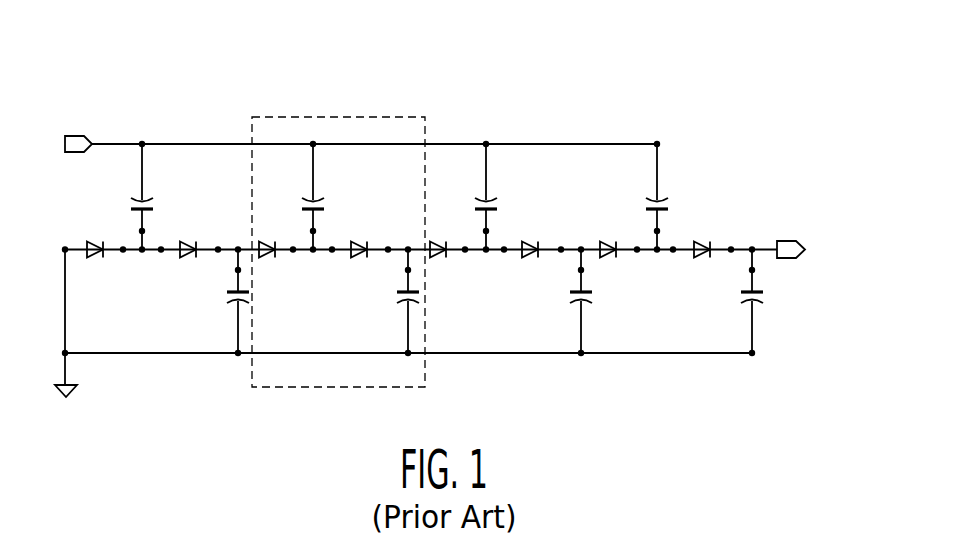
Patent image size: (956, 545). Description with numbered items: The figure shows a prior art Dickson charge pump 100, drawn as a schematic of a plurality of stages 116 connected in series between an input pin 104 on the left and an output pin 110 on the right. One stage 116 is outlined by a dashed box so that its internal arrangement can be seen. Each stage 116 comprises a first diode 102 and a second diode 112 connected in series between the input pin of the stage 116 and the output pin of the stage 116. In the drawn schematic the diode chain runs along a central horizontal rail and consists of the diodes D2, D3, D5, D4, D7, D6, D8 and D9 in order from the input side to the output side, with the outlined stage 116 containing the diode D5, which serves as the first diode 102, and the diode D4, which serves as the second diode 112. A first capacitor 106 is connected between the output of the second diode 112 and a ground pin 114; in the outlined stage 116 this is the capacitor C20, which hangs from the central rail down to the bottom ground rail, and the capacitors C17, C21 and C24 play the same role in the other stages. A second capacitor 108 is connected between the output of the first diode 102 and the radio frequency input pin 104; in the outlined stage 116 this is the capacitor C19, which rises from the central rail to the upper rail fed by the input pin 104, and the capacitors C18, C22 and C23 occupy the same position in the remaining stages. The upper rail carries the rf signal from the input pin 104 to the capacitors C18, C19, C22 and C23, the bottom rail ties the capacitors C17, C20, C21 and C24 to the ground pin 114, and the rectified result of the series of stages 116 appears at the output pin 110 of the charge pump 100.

The Dickson charge pump 100 is at (593, 90).
The first diode 102 is at (237, 217).
The input pin 104 is at (75, 154).
The first capacitor 106 is at (417, 331).
The second capacitor 108 is at (318, 140).
The output pin 110 is at (782, 241).
The second diode 112 is at (312, 298).
The ground pin 114 is at (77, 388).
The stage 116 is at (289, 117).
The capacitor C17 is at (226, 296).
The capacitor C18 is at (131, 200).
The capacitor C19 is at (303, 200).
The capacitor C20 is at (397, 293).
The capacitor C21 is at (594, 292).
The capacitor C22 is at (494, 200).
The capacitor C23 is at (665, 200).
The capacitor C24 is at (764, 292).
The diode D2 is at (100, 258).
The diode D3 is at (187, 241).
The diode D4 is at (359, 241).
The diode D5 is at (277, 258).
The diode D6 is at (530, 241).
The diode D7 is at (440, 241).
The diode D8 is at (607, 241).
The diode D9 is at (700, 241).